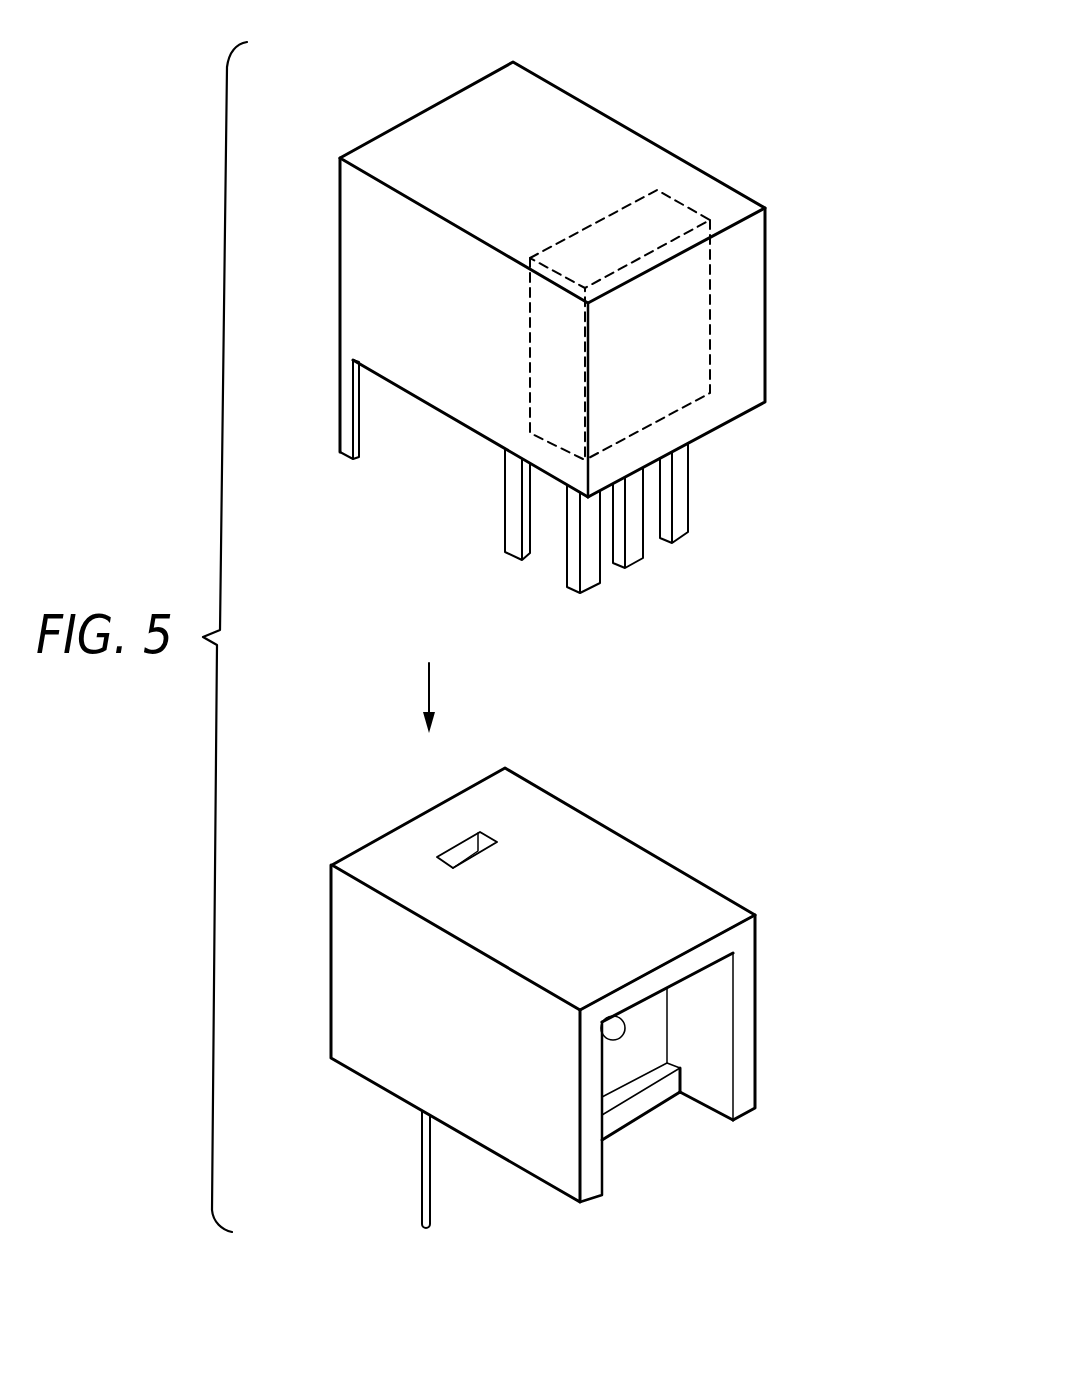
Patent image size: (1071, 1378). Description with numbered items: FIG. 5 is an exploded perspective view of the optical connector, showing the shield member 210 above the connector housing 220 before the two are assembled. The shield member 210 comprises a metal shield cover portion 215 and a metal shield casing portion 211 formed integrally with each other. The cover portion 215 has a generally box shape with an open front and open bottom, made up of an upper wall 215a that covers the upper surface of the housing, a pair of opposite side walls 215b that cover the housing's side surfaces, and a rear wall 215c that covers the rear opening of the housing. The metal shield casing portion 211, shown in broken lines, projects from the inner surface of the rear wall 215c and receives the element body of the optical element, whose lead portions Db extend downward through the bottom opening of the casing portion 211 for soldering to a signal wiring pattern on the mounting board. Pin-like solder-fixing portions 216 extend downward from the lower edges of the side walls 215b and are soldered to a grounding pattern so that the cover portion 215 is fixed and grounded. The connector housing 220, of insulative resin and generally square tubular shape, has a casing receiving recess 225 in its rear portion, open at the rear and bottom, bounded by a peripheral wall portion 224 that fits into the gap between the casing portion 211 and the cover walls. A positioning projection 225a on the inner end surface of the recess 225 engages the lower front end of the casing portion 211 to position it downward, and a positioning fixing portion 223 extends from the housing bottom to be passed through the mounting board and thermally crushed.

The shield member 210 is at (772, 129).
The metal shield cover portion 215 is at (620, 153).
The upper wall 215a is at (550, 175).
The side walls 215b is at (465, 330).
The rear wall 215c is at (680, 357).
The metal shield casing portion 211 is at (690, 205).
The solder-fixing portions 216 is at (347, 455).
The lead portions Db is at (698, 562).
The connector housing 220 is at (633, 838).
The positioning fixing portion 223 is at (432, 1197).
The peripheral wall portion 224 is at (695, 963).
The casing receiving recess 225 is at (650, 1017).
The positioning projection 225a is at (642, 1115).